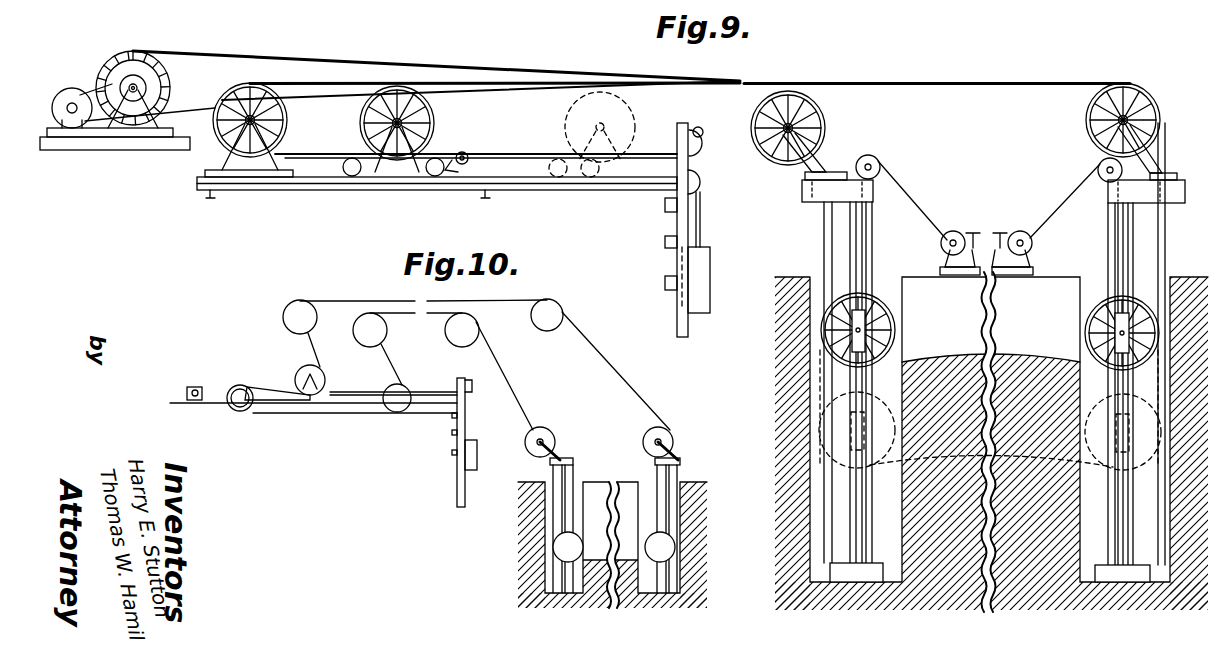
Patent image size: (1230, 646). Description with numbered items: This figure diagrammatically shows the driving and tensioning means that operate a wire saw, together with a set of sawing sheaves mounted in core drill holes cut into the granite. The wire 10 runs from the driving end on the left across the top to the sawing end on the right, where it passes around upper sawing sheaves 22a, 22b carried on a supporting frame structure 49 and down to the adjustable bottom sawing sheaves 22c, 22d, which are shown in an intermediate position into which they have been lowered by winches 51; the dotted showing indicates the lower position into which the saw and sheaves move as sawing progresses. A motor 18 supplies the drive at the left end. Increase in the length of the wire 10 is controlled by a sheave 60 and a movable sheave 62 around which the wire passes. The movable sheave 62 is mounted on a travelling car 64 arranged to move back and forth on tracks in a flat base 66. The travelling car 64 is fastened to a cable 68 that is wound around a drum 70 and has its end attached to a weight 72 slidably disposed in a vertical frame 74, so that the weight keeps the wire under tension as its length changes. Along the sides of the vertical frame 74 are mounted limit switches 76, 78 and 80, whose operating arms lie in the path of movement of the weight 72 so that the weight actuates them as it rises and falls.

In FIG. 9, the wire 10 is at (823, 238).
In FIG. 10, the wire 10 is at (532, 394).
In FIG. 9, the motor 18 is at (66, 95).
In FIG. 9, the sawing sheave 22a is at (1157, 107).
In FIG. 9, the sawing sheave 22b is at (823, 118).
In FIG. 9, the adjustable sawing sheave 22c is at (1143, 307).
In FIG. 9, the adjustable sawing sheave 22d is at (880, 318).
In FIG. 9, the supporting frame structure 49 is at (1173, 192).
In FIG. 9, the winch 51 is at (988, 231).
In FIG. 9, the sheave 60 is at (220, 142).
In FIG. 9, the movable sheave 62 is at (360, 130).
In FIG. 9, the travelling car 64 is at (405, 166).
In FIG. 9, the flat base 66 is at (305, 185).
In FIG. 9, the cable 68 is at (495, 152).
In FIG. 9, the drum 70 is at (710, 142).
In FIG. 9, the weight 72 is at (710, 257).
In FIG. 9, the vertical frame 74 is at (680, 323).
In FIG. 9, the limit switch 76 is at (664, 204).
In FIG. 9, the limit switch 78 is at (664, 242).
In FIG. 9, the limit switch 80 is at (664, 284).